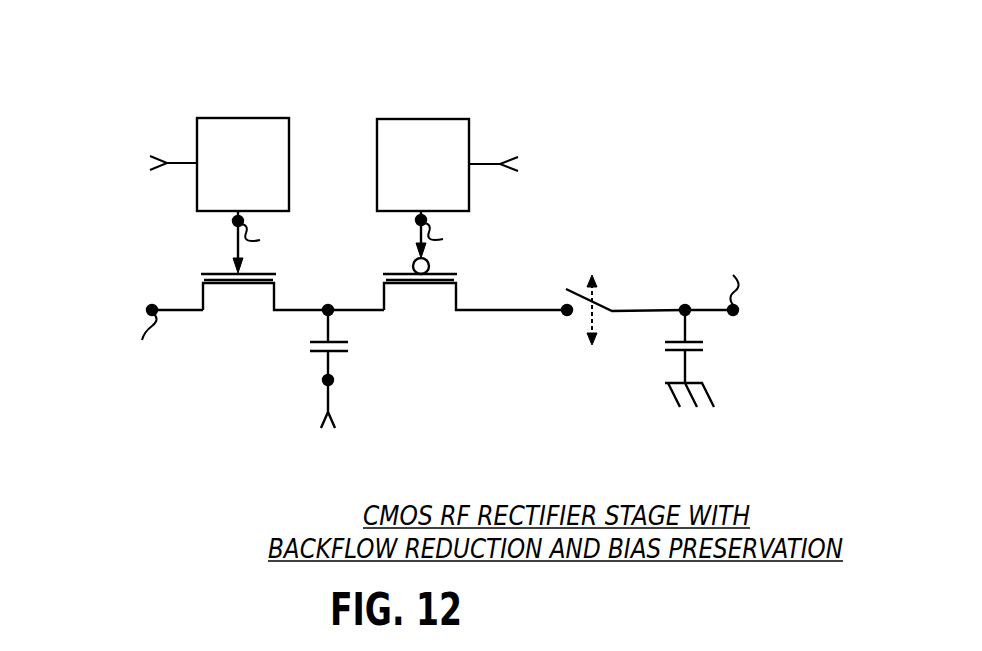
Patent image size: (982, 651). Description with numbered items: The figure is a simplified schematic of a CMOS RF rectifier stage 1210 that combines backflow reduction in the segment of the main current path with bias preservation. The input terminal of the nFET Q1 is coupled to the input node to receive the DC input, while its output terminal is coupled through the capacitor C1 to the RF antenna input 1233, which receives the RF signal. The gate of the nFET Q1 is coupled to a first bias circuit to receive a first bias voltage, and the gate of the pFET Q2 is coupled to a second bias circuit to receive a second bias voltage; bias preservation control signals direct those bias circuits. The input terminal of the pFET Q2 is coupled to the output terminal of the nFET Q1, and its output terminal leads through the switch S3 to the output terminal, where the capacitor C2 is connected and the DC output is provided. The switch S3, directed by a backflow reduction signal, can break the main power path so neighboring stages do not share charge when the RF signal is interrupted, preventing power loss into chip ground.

The CMOS RF rectifier stage 1210 is at (115, 74).
The RF antenna input node (RF A.IN) 1233 is at (323, 381).
The nFET Q1 is at (264, 267).
The pFET Q2 is at (475, 266).
The capacitor C1 is at (346, 345).
The capacitor C2 is at (701, 358).
The switch S3 is at (623, 332).